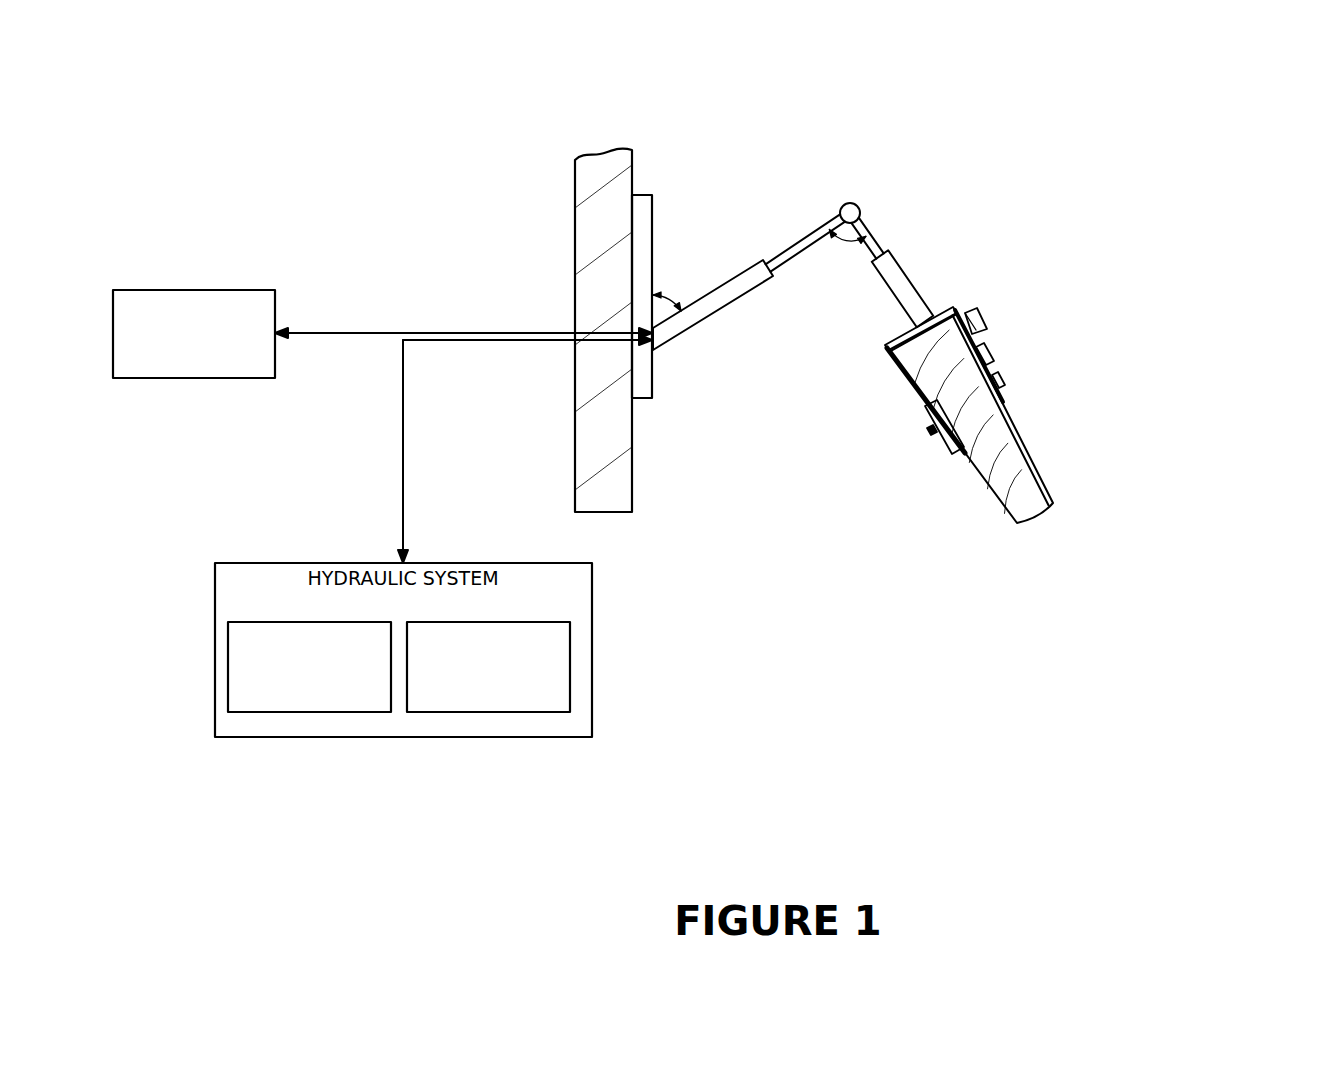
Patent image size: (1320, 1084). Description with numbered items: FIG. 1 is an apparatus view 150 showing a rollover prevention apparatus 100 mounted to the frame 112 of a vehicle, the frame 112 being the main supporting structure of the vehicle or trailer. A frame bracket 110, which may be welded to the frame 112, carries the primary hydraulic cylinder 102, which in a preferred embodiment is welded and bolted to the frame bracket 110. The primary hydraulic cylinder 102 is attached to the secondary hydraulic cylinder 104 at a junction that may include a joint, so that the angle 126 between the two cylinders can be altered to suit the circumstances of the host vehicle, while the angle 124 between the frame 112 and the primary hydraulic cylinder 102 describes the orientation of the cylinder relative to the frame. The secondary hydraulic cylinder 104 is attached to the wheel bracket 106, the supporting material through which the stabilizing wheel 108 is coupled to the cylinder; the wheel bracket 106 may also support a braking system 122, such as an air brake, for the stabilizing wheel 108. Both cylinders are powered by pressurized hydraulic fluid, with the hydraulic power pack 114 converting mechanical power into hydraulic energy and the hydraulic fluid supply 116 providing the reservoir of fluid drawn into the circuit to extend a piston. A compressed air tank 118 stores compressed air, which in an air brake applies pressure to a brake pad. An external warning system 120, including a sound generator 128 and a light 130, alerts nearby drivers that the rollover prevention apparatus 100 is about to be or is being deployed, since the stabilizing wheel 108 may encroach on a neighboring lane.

The rollover prevention apparatus 100 is at (827, 507).
The primary hydraulic cylinder 102 is at (681, 334).
The secondary hydraulic cylinder 104 is at (896, 263).
The wheel bracket 106 is at (952, 311).
The stabilizing wheel 108 is at (1038, 508).
The frame bracket 110 is at (652, 195).
The frame 112 is at (575, 190).
The hydraulic power pack 114 is at (309, 667).
The hydraulic fluid supply 116 is at (488, 667).
The compressed air tank 118 is at (194, 334).
The external warning system 120 is at (1020, 342).
The braking system 122 is at (960, 453).
The frame angle 124 is at (662, 295).
The joint angle 126 is at (845, 243).
The sound generator 128 is at (973, 315).
The light 130 is at (1001, 377).
The apparatus view 150 is at (1142, 793).